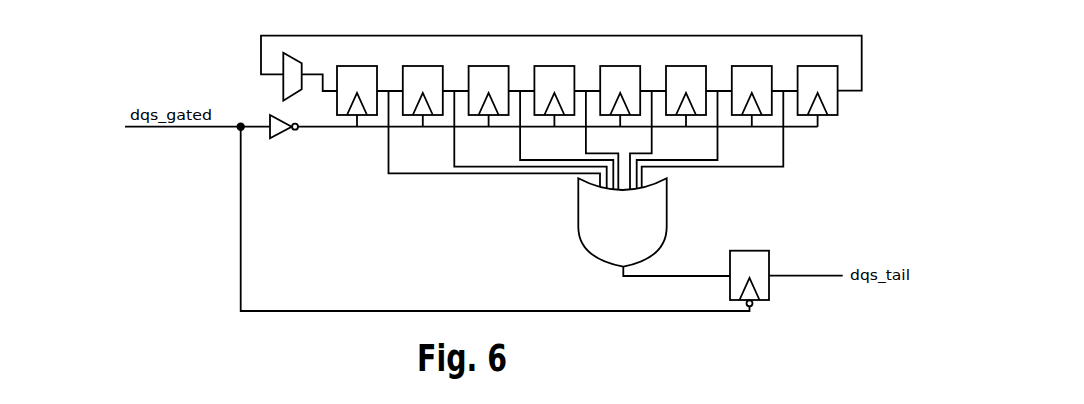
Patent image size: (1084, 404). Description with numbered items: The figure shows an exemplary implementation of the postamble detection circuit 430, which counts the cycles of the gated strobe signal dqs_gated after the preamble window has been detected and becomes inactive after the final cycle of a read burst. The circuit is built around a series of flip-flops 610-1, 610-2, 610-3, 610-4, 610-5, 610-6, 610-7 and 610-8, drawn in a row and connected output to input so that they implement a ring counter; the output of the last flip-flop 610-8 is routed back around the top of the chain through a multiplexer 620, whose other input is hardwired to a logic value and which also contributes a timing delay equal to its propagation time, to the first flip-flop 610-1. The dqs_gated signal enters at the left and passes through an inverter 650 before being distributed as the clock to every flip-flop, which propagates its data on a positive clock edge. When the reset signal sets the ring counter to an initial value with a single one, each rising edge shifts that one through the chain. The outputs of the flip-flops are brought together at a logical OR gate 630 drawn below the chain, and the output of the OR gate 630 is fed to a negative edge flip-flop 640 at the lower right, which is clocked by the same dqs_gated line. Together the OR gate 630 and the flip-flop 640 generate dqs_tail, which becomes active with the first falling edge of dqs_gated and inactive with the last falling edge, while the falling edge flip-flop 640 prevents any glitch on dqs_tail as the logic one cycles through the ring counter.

The postamble detection circuit 430 is at (194, 41).
The multiplexer 620 is at (300, 63).
The flip-flop 610-1 is at (353, 66).
The flip-flop 610-2 is at (425, 57).
The flip-flop 610-3 is at (491, 57).
The flip-flop 610-4 is at (556, 57).
The flip-flop 610-5 is at (622, 57).
The flip-flop 610-6 is at (688, 57).
The flip-flop 610-7 is at (754, 57).
The flip-flop 610-8 is at (820, 57).
The logical OR gate 630 is at (667, 218).
The negative edge flip-flop 640 is at (769, 251).
The inverter 650 is at (273, 138).